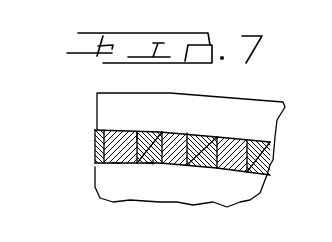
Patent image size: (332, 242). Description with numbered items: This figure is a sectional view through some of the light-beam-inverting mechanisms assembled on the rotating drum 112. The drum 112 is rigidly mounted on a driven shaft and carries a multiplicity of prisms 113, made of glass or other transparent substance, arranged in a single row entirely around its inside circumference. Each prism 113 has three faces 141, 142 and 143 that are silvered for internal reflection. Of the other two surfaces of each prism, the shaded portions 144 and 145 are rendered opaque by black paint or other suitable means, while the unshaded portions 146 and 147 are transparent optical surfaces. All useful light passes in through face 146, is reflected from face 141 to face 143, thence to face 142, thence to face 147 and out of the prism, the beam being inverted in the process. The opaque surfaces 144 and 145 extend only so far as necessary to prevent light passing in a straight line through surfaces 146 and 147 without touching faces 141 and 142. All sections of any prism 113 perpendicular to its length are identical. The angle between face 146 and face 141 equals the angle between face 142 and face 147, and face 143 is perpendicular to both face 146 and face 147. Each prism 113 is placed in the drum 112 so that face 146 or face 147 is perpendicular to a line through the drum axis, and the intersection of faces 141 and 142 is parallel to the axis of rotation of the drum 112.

The drum 112 is at (270, 101).
The prism 113 is at (256, 137).
The silvered face 141 is at (165, 130).
The silvered face 142 is at (153, 164).
The silvered face 143 is at (93, 152).
The opaque portion 144 is at (107, 130).
The opaque portion 145 is at (117, 167).
The transparent optical surface 146 is at (143, 130).
The transparent optical surface 147 is at (150, 167).